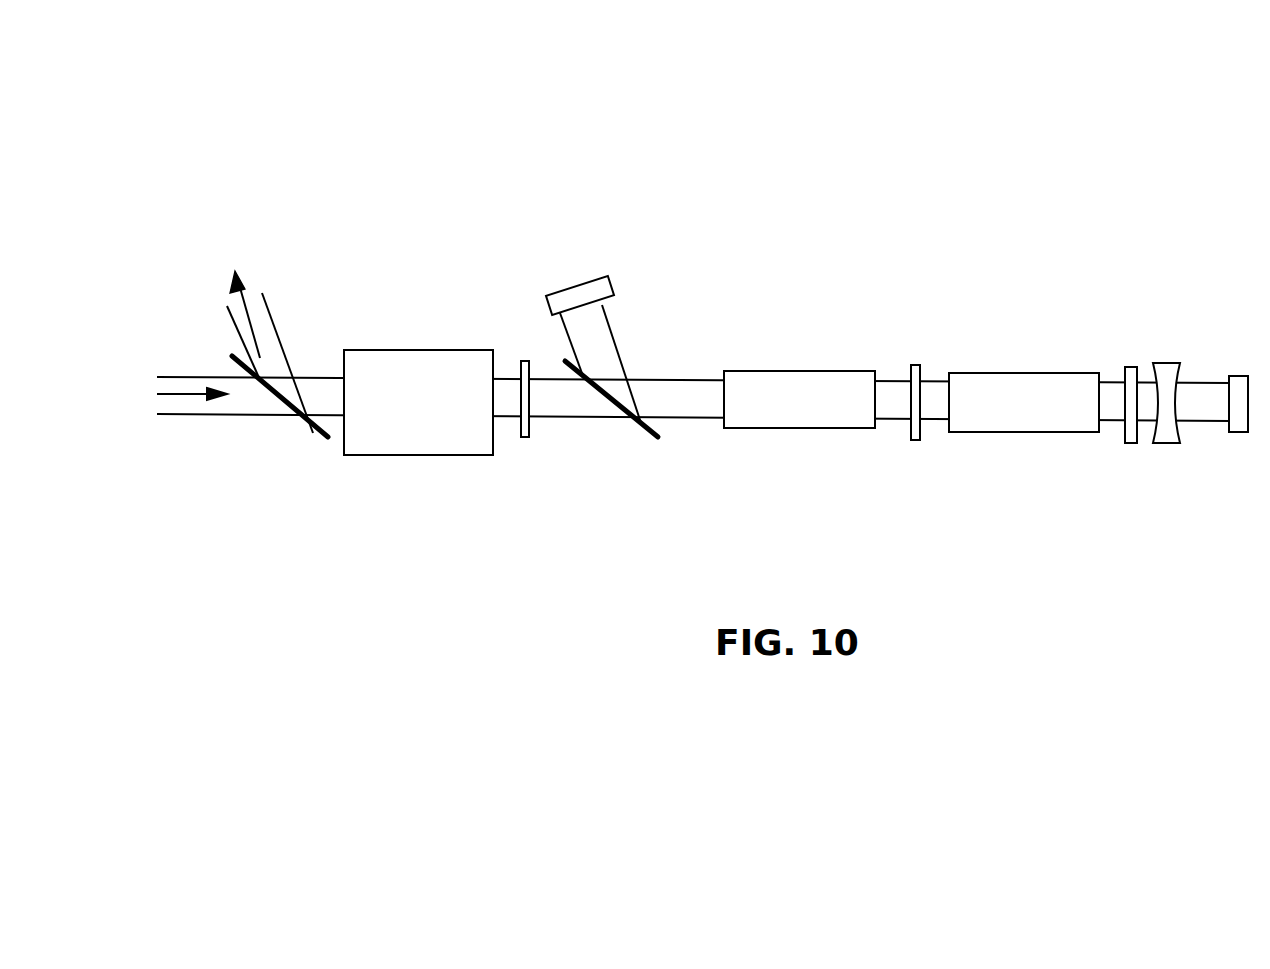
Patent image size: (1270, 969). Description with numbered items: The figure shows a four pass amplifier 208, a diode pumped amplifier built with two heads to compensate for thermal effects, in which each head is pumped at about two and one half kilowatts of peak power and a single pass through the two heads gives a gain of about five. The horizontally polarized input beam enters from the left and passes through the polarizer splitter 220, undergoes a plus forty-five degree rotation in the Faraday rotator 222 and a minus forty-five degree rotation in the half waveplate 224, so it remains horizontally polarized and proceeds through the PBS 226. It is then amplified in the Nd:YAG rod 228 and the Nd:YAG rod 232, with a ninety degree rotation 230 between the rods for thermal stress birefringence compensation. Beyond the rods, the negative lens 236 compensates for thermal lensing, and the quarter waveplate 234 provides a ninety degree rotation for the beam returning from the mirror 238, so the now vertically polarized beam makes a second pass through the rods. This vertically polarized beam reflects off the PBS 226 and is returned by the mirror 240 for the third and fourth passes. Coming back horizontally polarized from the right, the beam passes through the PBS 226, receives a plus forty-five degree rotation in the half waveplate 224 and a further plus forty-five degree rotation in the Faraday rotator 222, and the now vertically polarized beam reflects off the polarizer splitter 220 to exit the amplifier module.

The four pass amplifier 208 is at (804, 183).
The polarizer splitter (PBS) 220 is at (287, 405).
The Faraday rotator 222 is at (400, 348).
The half waveplate 224 is at (515, 438).
The PBS 226 is at (647, 435).
The Nd:YAG rod 228 is at (772, 370).
The 90 degree rotator 230 is at (912, 365).
The Nd:YAG rod 232 is at (1005, 372).
The quarter waveplate 234 is at (1127, 367).
The negative lens 236 is at (1173, 363).
The mirror 238 is at (1230, 432).
The mirror 240 is at (588, 282).